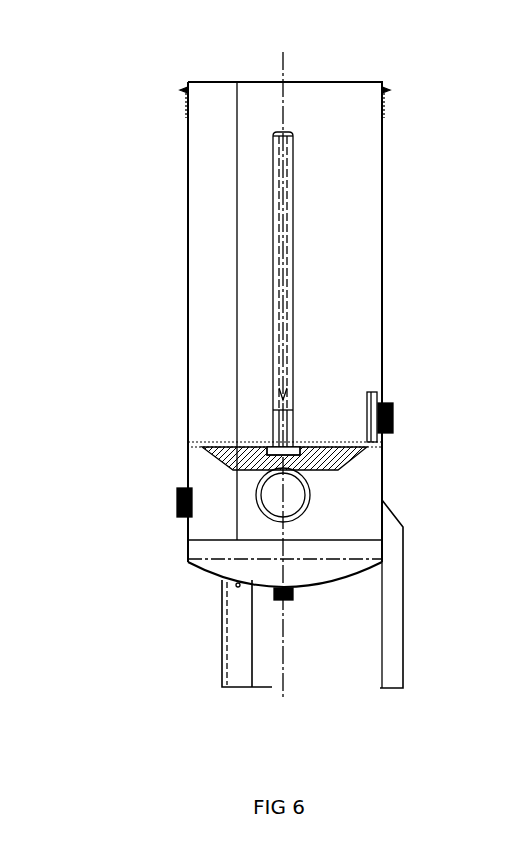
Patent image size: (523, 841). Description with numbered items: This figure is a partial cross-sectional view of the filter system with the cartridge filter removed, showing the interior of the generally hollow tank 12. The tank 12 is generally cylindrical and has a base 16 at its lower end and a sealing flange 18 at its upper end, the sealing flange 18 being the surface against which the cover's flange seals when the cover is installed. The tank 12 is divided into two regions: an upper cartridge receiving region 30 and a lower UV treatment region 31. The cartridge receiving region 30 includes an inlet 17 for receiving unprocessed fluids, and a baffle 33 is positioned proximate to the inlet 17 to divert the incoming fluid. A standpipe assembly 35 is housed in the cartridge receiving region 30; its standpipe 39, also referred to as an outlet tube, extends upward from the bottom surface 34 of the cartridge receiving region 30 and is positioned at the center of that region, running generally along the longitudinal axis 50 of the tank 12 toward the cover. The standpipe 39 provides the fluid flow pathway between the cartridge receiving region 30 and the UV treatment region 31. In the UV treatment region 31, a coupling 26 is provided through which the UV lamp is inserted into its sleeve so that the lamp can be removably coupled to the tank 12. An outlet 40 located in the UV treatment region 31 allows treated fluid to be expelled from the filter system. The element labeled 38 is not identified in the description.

The tank 12 is at (388, 213).
The base 16 is at (253, 600).
The inlet 17 is at (400, 399).
The sealing flange 18 is at (392, 93).
The coupling 26 is at (322, 491).
The cartridge receiving region 30 is at (211, 291).
The UV treatment region 31 is at (208, 482).
The baffle 33 is at (381, 388).
The bottom surface 34 is at (213, 438).
The standpipe assembly 35 is at (312, 362).
The side block 38 is at (170, 514).
The standpipe 39 is at (300, 296).
The outlet 40 is at (291, 607).
The longitudinal axis 50 is at (283, 70).